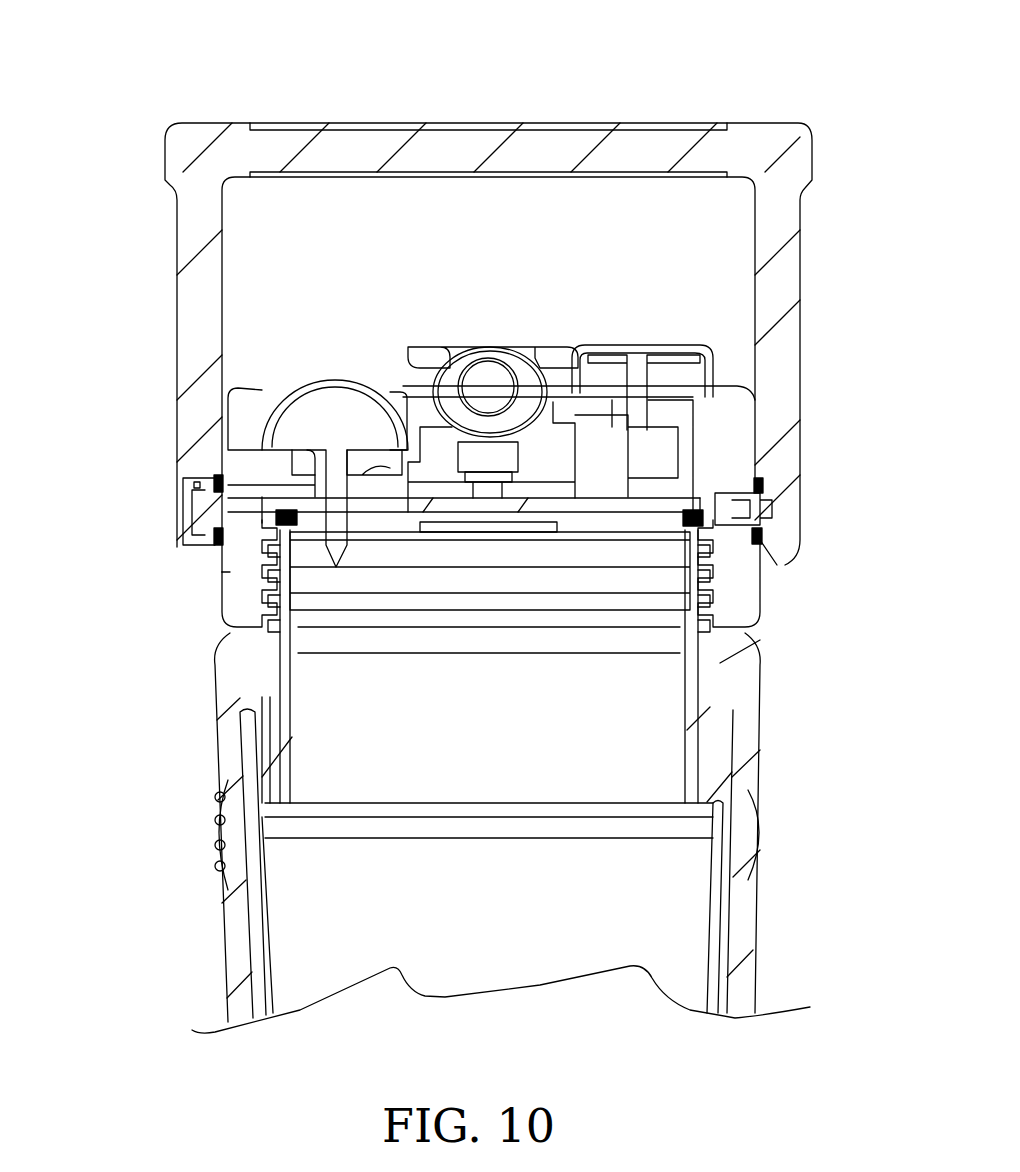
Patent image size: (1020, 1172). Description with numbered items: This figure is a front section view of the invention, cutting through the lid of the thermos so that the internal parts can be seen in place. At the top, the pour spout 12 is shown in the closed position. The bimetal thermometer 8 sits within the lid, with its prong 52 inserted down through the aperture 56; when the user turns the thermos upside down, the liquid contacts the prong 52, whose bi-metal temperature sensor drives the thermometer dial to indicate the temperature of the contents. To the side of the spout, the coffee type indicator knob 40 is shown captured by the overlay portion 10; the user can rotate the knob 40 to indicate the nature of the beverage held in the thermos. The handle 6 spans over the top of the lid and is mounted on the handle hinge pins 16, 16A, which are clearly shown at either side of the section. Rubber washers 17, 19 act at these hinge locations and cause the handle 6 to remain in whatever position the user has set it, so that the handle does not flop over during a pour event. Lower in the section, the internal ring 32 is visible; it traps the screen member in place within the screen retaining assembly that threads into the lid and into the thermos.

The handle 6 is at (458, 142).
The bimetal thermometer 8 is at (290, 407).
The overlay portion 10 is at (613, 413).
The pour spout 12 is at (520, 378).
The handle hinge pin 16 is at (195, 512).
The handle hinge pin 16A is at (782, 505).
The rubber washer 17 is at (228, 522).
The rubber washer 19 is at (772, 548).
The internal ring 32 is at (360, 612).
The coffee type indicator knob 40 is at (680, 375).
The prong 52 is at (332, 493).
The aperture 56 is at (312, 502).